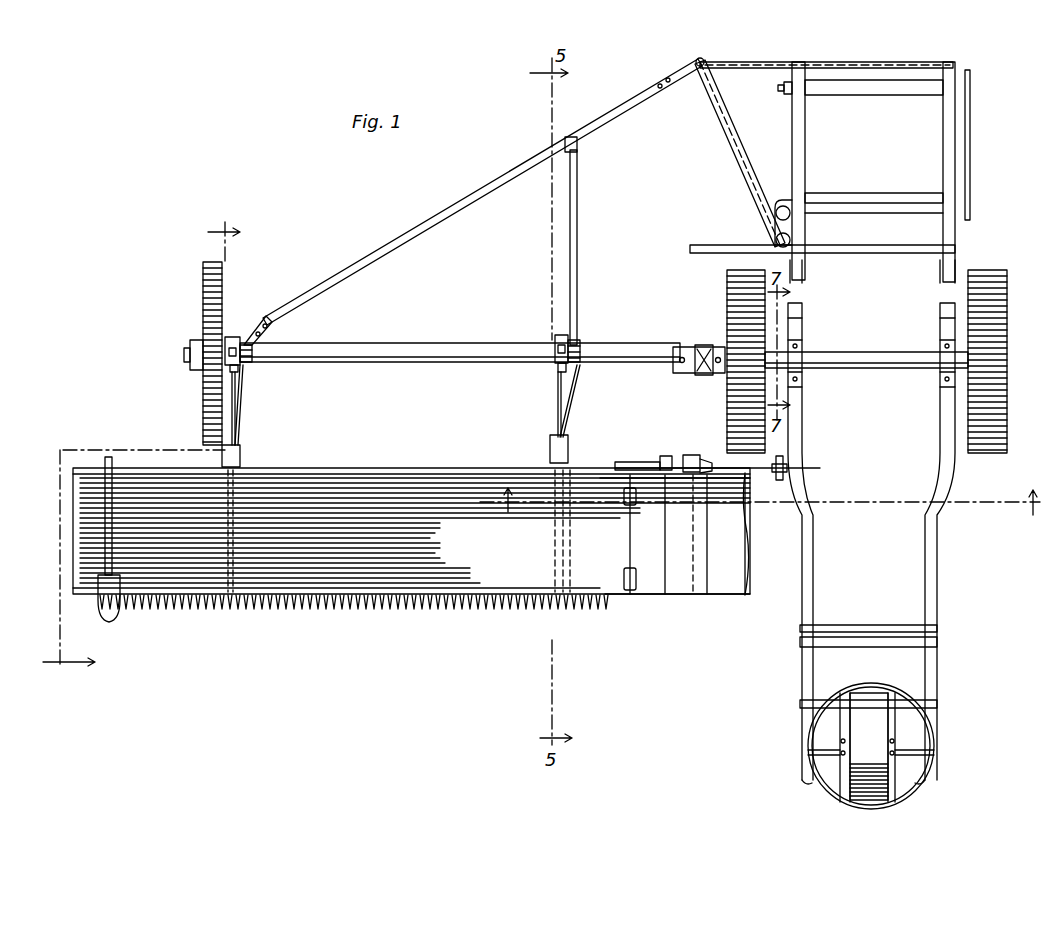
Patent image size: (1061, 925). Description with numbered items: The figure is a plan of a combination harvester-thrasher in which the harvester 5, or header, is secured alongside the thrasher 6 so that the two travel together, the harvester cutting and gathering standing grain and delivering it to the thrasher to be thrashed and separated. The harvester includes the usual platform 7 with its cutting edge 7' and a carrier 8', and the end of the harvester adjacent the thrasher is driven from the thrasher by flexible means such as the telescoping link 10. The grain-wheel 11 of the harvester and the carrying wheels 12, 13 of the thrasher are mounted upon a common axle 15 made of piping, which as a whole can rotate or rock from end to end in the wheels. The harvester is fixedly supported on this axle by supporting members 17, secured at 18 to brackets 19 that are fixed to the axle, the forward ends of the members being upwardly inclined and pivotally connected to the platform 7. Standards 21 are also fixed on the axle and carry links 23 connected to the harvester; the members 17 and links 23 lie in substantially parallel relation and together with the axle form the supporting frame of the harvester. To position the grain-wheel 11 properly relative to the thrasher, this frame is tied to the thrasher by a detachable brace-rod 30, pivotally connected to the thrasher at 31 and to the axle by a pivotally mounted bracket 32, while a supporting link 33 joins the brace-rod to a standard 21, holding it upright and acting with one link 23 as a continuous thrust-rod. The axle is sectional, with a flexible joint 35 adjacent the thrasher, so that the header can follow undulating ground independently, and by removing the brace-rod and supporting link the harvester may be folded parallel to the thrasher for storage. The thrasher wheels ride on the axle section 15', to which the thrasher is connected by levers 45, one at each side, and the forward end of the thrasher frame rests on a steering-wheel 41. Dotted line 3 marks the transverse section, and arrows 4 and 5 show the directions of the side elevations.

The section line 3 is at (765, 503).
The viewing arrows 4 is at (141, 449).
The harvester 5 is at (90, 590).
The thrasher 6 is at (871, 522).
The platform 7 is at (411, 531).
The cutter teeth 7' is at (354, 620).
The carrier 8' is at (758, 534).
The link 10 is at (760, 470).
The grain-wheel 11 is at (203, 402).
The carrying wheel 12 is at (727, 415).
The carrying wheel 13 is at (1007, 418).
The axle 15 is at (460, 369).
The axle section 15' is at (866, 374).
The supporting member 17 is at (236, 405).
The securing point 18 is at (240, 372).
The bracket 19 is at (234, 336).
The standard 21 is at (252, 360).
The link 23 is at (240, 418).
The brace-rod 30 is at (410, 242).
The pivotal connection 31 is at (700, 70).
The bracket 32 is at (275, 336).
The supporting link 33 is at (577, 260).
The flexible joint 35 is at (700, 346).
The steering-wheel 41 is at (871, 746).
The lever 45 is at (802, 336).